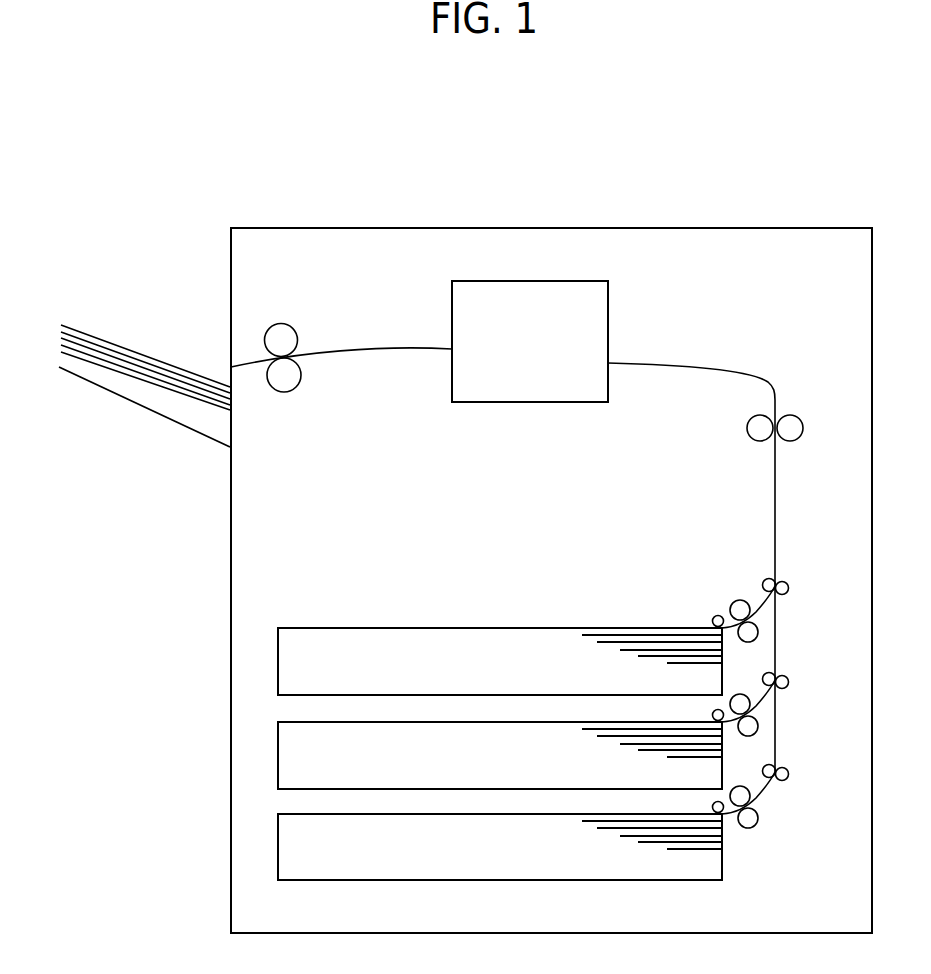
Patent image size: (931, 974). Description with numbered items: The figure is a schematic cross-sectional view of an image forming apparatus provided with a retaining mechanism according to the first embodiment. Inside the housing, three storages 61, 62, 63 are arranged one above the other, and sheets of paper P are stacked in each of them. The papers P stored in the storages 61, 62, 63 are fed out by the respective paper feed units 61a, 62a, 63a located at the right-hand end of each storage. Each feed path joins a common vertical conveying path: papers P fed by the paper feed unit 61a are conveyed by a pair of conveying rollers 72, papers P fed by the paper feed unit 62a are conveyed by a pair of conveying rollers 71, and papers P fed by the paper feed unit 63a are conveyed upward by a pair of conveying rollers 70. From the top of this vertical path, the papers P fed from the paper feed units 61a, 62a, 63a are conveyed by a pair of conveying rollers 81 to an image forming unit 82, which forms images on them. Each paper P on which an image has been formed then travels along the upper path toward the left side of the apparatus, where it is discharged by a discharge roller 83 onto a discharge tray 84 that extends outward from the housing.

The storage 61 is at (424, 676).
The storage 62 is at (424, 770).
The storage 63 is at (424, 863).
The paper feed unit 61a is at (712, 619).
The paper feed unit 62a is at (712, 714).
The paper feed unit 63a is at (712, 806).
The pair of conveying rollers 70 is at (788, 780).
The pair of conveying rollers 71 is at (788, 688).
The pair of conveying rollers 72 is at (788, 594).
The pair of conveying rollers 81 is at (791, 421).
The image forming unit 82 is at (568, 351).
The discharge roller 83 is at (280, 334).
The discharge tray 84 is at (150, 396).
The paper P is at (637, 653).